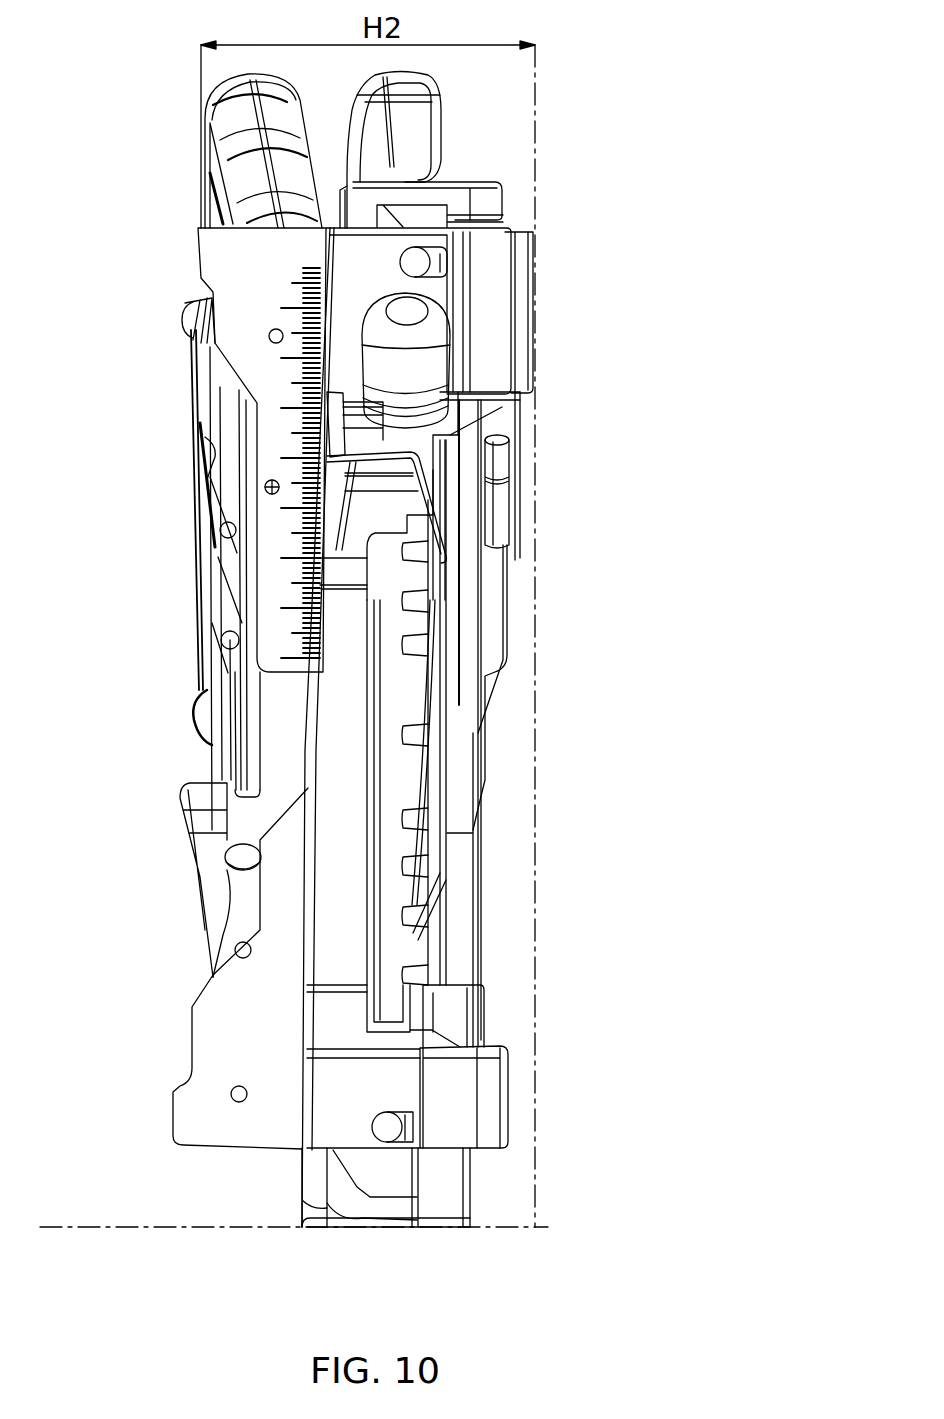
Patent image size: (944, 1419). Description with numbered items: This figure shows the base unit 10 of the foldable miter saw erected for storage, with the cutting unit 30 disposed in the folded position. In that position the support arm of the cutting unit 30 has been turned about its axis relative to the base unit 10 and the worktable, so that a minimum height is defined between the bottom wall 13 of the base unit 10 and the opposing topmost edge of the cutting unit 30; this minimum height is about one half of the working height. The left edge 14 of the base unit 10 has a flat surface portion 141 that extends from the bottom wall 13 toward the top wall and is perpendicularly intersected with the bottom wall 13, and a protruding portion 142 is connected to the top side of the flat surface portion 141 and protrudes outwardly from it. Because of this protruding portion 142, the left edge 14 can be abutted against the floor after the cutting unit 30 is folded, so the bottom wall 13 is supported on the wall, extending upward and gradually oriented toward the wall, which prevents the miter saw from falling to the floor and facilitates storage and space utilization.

The base unit 10 is at (483, 340).
The bottom wall 13 is at (535, 303).
The cutting unit 30 is at (193, 340).
The left edge 14 is at (376, 1230).
The flat surface portion 141 is at (386, 1187).
The protruding portion 142 is at (305, 1213).